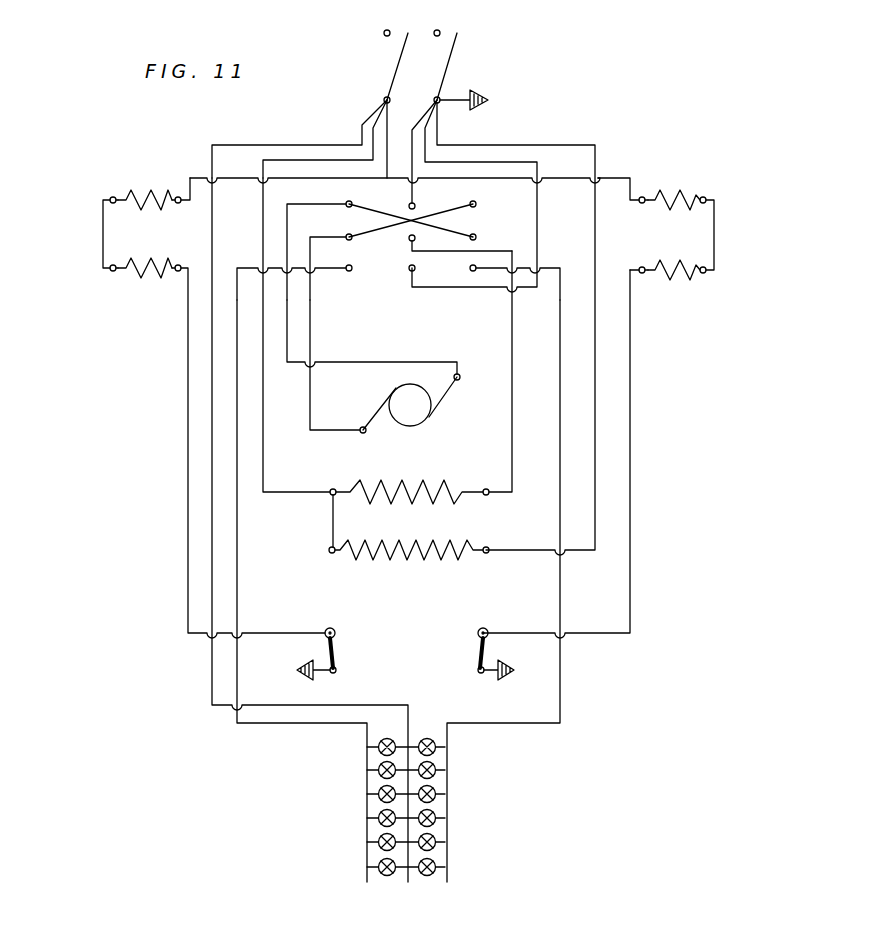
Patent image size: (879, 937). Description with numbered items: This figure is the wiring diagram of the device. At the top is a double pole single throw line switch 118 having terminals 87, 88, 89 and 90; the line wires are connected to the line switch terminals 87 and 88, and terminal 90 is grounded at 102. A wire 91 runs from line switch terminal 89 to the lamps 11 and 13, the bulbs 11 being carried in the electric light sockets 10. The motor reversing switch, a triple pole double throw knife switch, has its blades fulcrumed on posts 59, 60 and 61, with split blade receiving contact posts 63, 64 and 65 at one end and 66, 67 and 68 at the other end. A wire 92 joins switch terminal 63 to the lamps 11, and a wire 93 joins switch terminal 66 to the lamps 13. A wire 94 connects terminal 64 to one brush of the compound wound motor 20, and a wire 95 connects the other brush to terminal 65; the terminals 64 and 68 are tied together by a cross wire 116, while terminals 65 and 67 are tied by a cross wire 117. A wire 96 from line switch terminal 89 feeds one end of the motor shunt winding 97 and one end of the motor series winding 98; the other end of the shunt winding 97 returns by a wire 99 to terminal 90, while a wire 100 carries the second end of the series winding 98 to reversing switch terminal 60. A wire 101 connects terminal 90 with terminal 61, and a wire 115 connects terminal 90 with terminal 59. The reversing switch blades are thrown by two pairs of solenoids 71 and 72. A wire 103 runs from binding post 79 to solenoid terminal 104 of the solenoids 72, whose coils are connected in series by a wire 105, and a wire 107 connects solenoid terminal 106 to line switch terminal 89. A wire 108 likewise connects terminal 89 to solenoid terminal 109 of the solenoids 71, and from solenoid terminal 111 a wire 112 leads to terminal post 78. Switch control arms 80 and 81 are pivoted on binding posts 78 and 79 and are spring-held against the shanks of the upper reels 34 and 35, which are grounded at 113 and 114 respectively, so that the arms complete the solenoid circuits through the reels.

The electric light sockets 10 is at (103, 235).
The electric light bulbs 11 is at (383, 845).
The bulbs 13 is at (432, 845).
The compound wound motor 20 is at (410, 403).
The upper reel 34 is at (336, 673).
The upper reel 35 is at (478, 673).
The bracket or post 59 is at (410, 272).
The bracket or post 60 is at (410, 240).
The bracket or post 61 is at (410, 205).
The split blade receiving contact post 63 is at (348, 271).
The split blade receiving contact post 64 is at (347, 239).
The split blade receiving contact post 65 is at (347, 206).
The split blade receiving contact post 66 is at (470, 268).
The split blade receiving contact post 67 is at (476, 236).
The split blade receiving contact post 68 is at (476, 203).
The solenoids 71 is at (175, 262).
The solenoids 72 is at (683, 262).
The binding post 78 is at (331, 628).
The binding post 79 is at (485, 628).
The switch control arm 80 is at (338, 653).
The switch control arm 81 is at (478, 652).
The line switch terminal 87 is at (385, 30).
The line switch terminal 88 is at (441, 31).
The line switch terminal 89 is at (384, 100).
The line switch terminal 90 is at (491, 64).
The wire 91 is at (232, 145).
The wire 92 is at (237, 552).
The wire 93 is at (560, 440).
The wire 94 is at (313, 400).
The wire 95 is at (345, 362).
The wire 96 is at (263, 440).
The motor shunt winding 97 is at (430, 556).
The motor series winding 98 is at (400, 482).
The wire 99 is at (596, 398).
The wire 100 is at (512, 395).
The wire 101 is at (400, 128).
The ground 102 is at (488, 97).
The wire 103 is at (631, 583).
The solenoid terminal 104 is at (645, 274).
The wire 105 is at (716, 238).
The solenoid terminal 106 is at (646, 198).
The wire 107 is at (615, 178).
The wire 108 is at (233, 180).
The solenoid terminal 109 is at (178, 196).
The solenoid terminal 111 is at (176, 272).
The wire 112 is at (188, 505).
The ground 113 is at (305, 667).
The ground 114 is at (520, 660).
The wire 115 is at (538, 238).
The cross wire 116 is at (451, 210).
The cross wire 117 is at (425, 224).
The double pole single throw line switch 118 is at (455, 50).